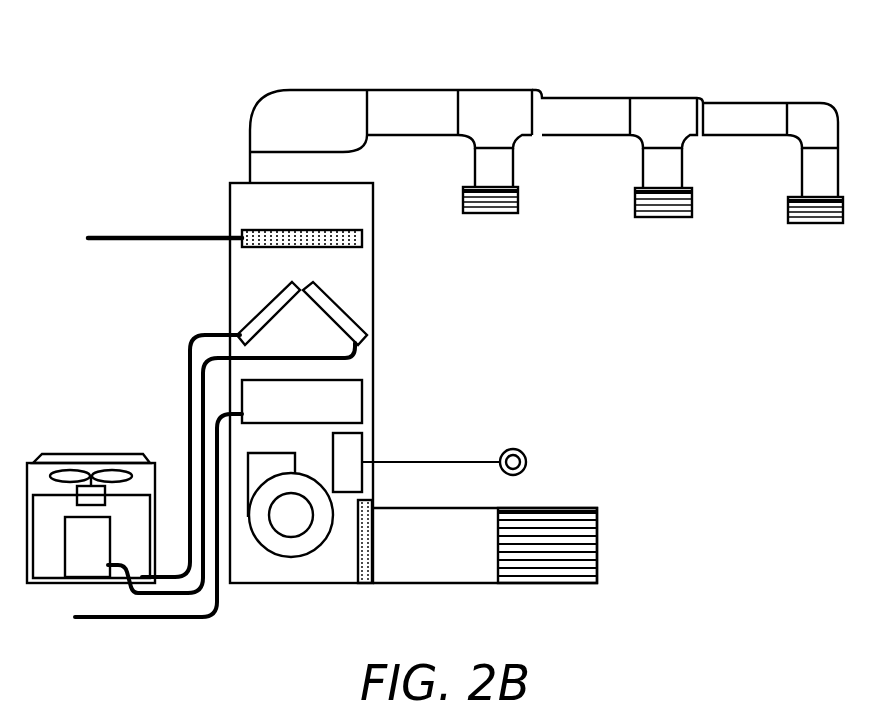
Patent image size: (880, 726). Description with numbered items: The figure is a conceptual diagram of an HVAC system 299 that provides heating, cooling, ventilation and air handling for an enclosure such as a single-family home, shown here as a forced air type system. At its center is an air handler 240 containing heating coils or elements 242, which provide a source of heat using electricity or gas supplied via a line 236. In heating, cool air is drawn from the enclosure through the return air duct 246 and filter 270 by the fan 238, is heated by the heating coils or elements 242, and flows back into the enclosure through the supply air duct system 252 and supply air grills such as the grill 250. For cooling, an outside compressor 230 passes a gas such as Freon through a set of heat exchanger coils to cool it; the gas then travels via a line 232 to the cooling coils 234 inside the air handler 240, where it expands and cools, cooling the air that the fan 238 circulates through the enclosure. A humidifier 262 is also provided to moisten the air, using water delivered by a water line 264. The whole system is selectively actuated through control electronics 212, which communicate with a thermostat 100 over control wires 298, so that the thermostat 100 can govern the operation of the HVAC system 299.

The thermostat 100 is at (527, 457).
The control electronics 212 is at (362, 473).
The outside compressor 230 is at (72, 452).
The line 232 is at (188, 397).
The cooling coils 234 is at (257, 312).
The line 236 is at (203, 618).
The fan 238 is at (292, 550).
The air handler 240 is at (228, 183).
The heating coils or elements 242 is at (302, 401).
The return air duct 246 is at (597, 568).
The supply air grill 250 is at (518, 204).
The supply air duct system 252 is at (576, 97).
The humidifier 262 is at (373, 238).
The water line 264 is at (110, 245).
The filter 270 is at (373, 562).
The control wires 298 is at (430, 460).
The HVAC system 299 is at (730, 425).